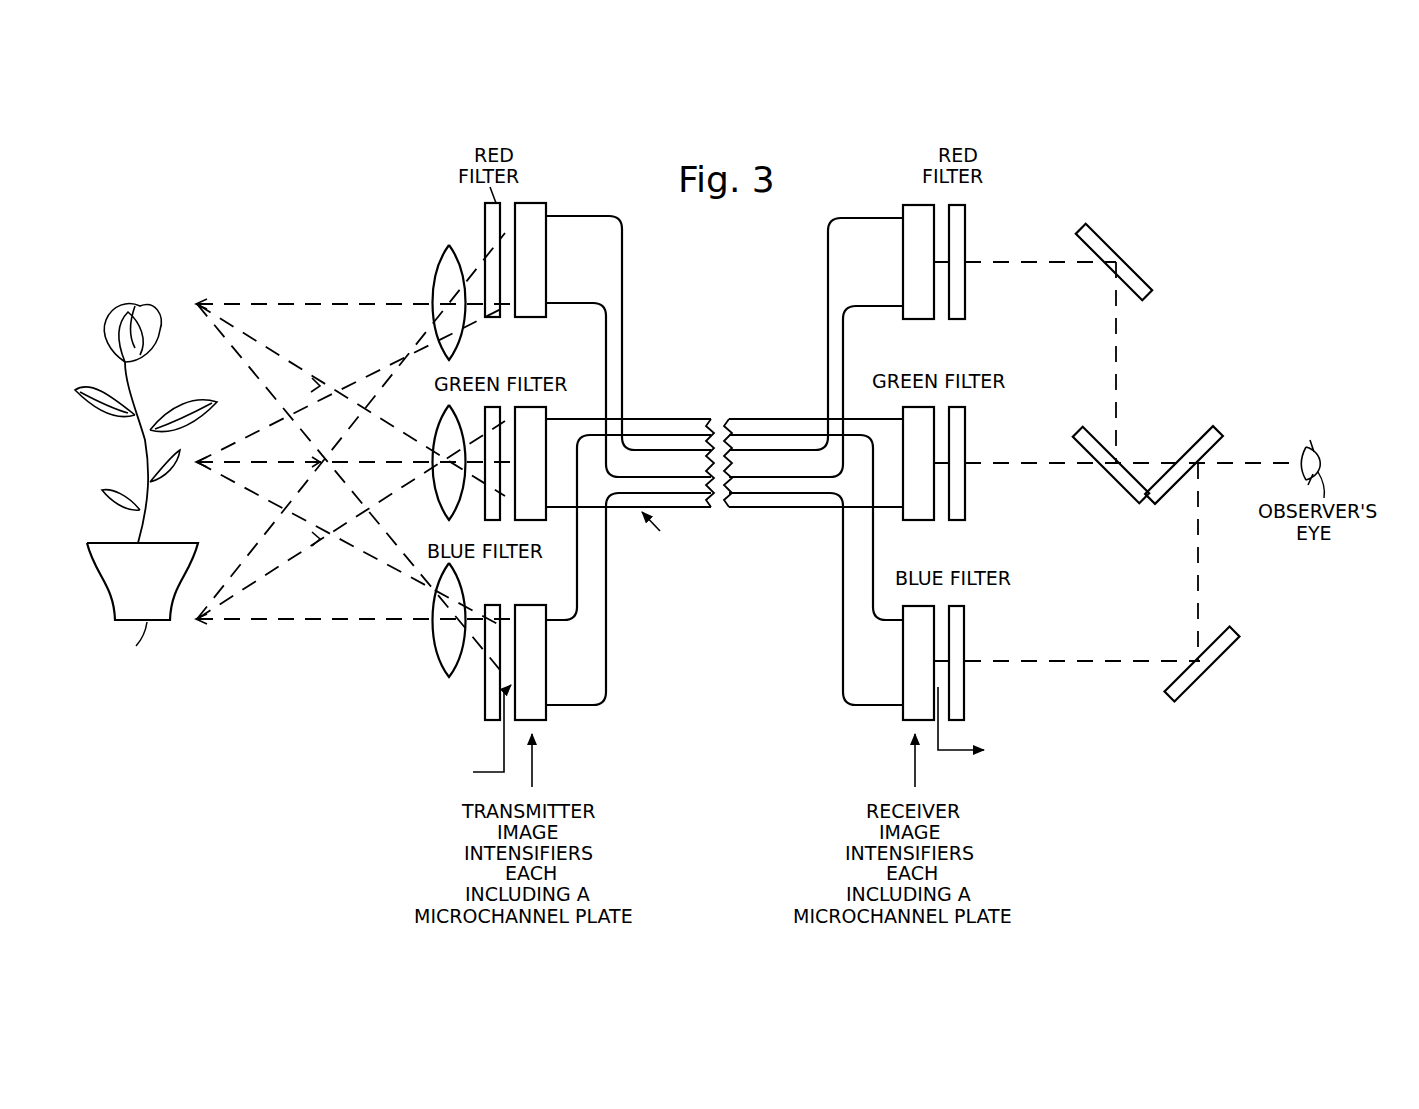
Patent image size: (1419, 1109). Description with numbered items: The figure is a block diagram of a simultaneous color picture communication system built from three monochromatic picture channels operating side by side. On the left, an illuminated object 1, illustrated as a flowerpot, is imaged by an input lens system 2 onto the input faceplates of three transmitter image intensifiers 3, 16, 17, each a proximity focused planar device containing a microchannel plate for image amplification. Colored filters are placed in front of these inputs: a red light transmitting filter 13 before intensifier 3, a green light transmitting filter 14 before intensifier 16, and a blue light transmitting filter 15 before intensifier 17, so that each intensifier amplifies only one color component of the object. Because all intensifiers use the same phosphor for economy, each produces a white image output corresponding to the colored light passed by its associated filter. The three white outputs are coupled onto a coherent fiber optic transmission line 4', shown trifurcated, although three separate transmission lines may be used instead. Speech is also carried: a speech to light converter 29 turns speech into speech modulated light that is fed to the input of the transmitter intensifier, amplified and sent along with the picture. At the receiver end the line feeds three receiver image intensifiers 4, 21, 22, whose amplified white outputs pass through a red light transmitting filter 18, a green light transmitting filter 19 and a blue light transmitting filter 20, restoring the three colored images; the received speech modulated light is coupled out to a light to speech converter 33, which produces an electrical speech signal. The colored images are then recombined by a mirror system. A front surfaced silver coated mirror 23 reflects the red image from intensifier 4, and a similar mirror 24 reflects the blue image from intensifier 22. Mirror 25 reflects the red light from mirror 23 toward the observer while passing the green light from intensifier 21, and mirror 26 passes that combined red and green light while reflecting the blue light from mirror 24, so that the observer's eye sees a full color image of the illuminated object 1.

The illuminated object 1 is at (170, 590).
The input lens system 2 is at (430, 668).
The transmitter image intensifier 3 is at (536, 203).
The red light transmitting filter 13 is at (485, 220).
The green light transmitting filter 14 is at (484, 505).
The blue light transmitting filter 15 is at (483, 704).
The transmitter image intensifier 16 is at (546, 419).
The transmitter image intensifier 17 is at (546, 714).
The speech to light converter 29 is at (375, 735).
The coherent fiber optic transmission line 4' is at (724, 460).
The receiver image intensifier 4 is at (901, 248).
The receiver image intensifier 21 is at (917, 522).
The receiver image intensifier 22 is at (900, 713).
The red light transmitting filter 18 is at (965, 233).
The green light transmitting filter 19 is at (965, 428).
The blue light transmitting filter 20 is at (964, 629).
The light to speech converter 33 is at (1057, 725).
The mirror 23 is at (1146, 266).
The mirror 24 is at (1229, 656).
The mirror 25 is at (1109, 478).
The mirror 26 is at (1198, 442).